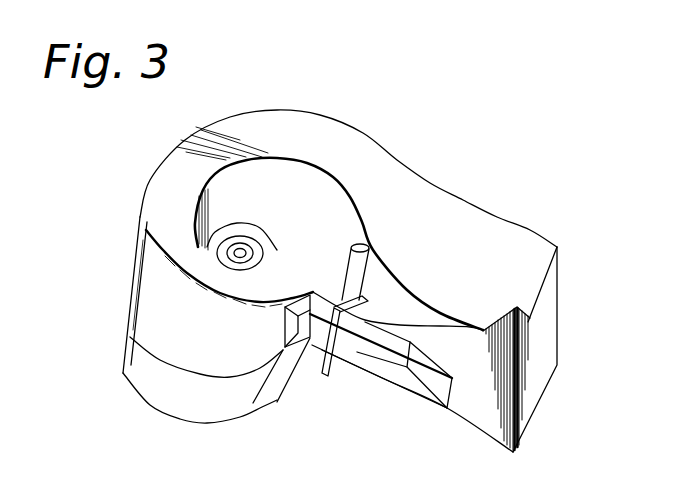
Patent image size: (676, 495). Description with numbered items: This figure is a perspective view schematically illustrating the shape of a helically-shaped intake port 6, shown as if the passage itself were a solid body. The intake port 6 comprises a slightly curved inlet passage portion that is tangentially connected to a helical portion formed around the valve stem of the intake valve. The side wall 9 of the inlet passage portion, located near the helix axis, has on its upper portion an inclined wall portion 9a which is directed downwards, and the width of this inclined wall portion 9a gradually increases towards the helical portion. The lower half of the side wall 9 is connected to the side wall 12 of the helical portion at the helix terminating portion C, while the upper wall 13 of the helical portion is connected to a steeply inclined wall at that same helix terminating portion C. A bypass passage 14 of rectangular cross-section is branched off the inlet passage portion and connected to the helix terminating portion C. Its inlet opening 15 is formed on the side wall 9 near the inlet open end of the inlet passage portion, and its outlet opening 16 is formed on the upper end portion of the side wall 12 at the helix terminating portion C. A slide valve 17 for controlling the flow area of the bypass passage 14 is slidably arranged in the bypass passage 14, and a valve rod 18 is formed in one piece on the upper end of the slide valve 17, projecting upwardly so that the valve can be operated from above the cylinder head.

The helically-shaped intake port 6 is at (508, 214).
The side wall 9 is at (474, 428).
The inclined wall portion 9a is at (407, 297).
The side wall of the helical portion 12 is at (152, 305).
The upper wall of the helical portion 13 is at (167, 243).
The bypass passage 14 is at (385, 383).
The inlet opening 15 is at (430, 386).
The outlet opening 16 is at (293, 328).
The slide valve 17 is at (340, 359).
The valve rod 18 is at (370, 262).
The helix terminating portion C is at (293, 285).